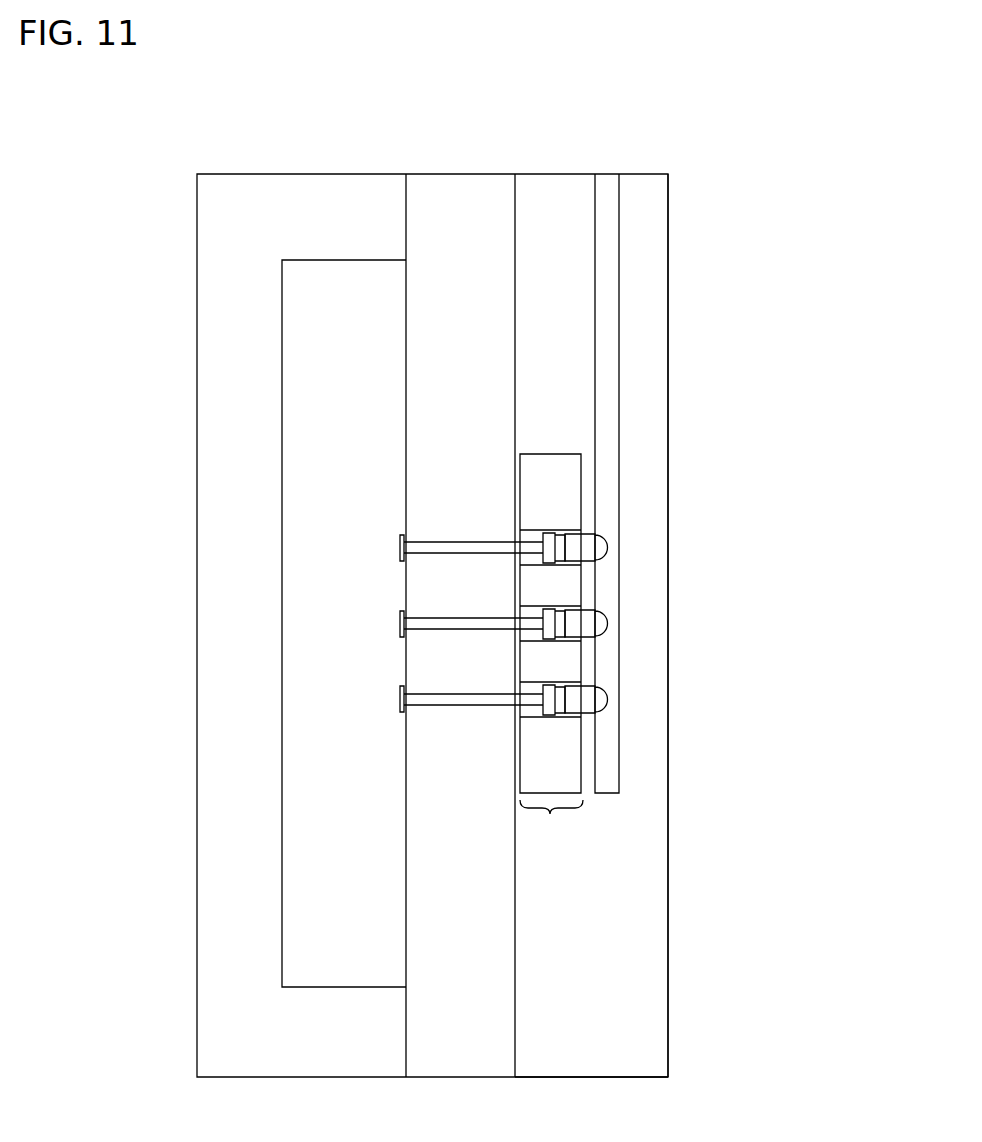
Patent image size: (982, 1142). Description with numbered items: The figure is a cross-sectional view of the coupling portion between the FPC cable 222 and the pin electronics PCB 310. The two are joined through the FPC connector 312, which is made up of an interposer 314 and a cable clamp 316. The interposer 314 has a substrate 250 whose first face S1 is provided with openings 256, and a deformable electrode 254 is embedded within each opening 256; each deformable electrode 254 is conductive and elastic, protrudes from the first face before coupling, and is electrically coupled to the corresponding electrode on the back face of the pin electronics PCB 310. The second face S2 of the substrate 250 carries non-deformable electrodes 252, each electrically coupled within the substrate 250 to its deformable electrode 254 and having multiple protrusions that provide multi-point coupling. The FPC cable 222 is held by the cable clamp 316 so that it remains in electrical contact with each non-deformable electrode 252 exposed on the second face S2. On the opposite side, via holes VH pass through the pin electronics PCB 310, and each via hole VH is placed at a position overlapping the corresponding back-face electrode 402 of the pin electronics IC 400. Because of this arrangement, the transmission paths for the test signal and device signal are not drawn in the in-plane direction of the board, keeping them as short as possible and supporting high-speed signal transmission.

The pin electronics IC 400 is at (315, 187).
The pin electronics PCB 310 is at (462, 187).
The FPC cable 222 is at (605, 187).
The substrate 250 is at (566, 481).
The back-face electrode 402 is at (400, 548).
The via hole VH is at (434, 702).
The deformable electrode 254 is at (533, 702).
The opening 256 is at (536, 684).
The non-deformable electrode 252 is at (586, 698).
The first face S1 is at (518, 477).
The second face S2 is at (581, 476).
The interposer 314 is at (550, 814).
The cable clamp 316 is at (645, 820).
The FPC connector 312 is at (782, 798).